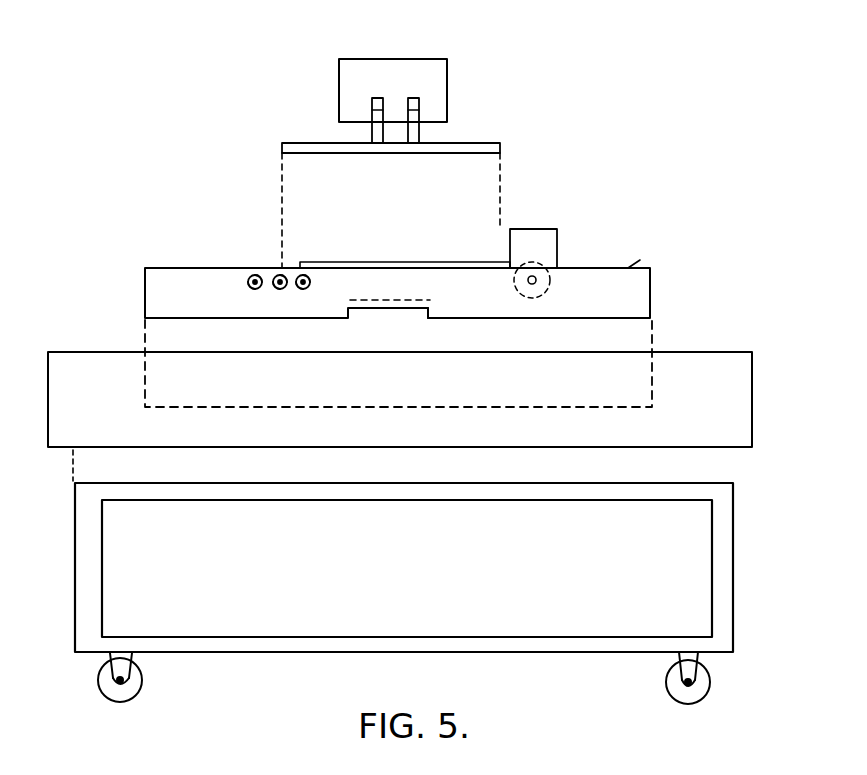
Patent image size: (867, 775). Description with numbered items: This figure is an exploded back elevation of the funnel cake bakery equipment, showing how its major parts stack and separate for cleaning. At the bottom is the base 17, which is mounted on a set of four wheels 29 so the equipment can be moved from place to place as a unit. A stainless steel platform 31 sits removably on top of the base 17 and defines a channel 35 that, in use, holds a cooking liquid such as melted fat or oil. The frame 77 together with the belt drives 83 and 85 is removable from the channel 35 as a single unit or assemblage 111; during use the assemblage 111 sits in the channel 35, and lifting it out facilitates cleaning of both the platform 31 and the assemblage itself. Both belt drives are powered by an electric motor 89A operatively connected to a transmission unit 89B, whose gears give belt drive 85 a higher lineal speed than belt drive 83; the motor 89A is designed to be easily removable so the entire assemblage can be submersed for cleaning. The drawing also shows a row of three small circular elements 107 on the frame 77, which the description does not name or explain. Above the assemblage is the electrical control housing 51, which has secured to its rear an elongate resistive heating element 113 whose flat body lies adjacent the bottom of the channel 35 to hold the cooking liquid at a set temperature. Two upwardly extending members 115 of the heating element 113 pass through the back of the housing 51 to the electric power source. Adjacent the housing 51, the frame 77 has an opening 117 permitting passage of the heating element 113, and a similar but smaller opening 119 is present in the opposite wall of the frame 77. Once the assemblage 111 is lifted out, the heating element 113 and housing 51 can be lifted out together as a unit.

The base 17 is at (733, 518).
The wheels 29 is at (143, 680).
The platform 31 is at (102, 410).
The channel 35 is at (276, 348).
The electrical control housing 51 is at (447, 60).
The frame 77 is at (198, 309).
The belt drive 83 is at (425, 263).
The belt drive 85 is at (632, 266).
The electric motor 89A is at (543, 229).
The transmission unit 89B is at (550, 283).
The rollers 107 is at (281, 303).
The assemblage 111 is at (138, 295).
The resistive heating element 113 is at (500, 143).
The upwardly extending members 115 is at (372, 132).
The opening 117 is at (430, 304).
The opening 119 is at (352, 302).